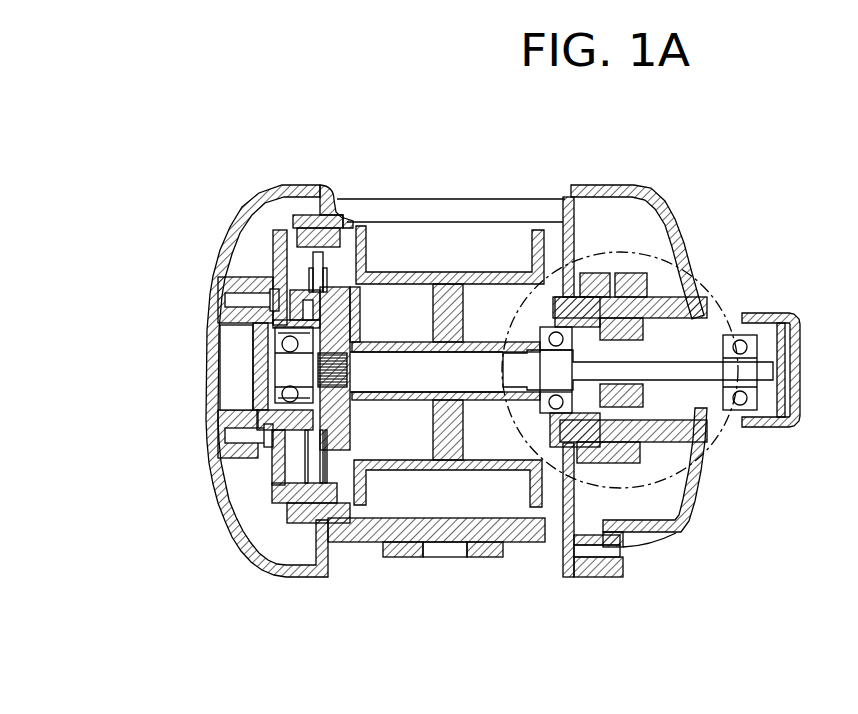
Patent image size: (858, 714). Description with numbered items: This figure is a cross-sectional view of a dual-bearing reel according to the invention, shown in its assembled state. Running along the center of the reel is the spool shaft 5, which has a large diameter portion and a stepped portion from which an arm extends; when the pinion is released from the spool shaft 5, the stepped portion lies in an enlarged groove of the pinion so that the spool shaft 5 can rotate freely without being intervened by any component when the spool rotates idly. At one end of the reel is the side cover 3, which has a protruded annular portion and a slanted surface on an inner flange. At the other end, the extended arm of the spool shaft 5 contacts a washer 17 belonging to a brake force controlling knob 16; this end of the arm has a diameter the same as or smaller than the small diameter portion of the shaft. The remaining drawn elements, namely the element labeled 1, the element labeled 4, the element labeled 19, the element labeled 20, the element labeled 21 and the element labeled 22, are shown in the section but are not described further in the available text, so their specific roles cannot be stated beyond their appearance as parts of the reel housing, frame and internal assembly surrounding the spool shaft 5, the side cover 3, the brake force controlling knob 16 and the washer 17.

The motor housing base 1 is at (544, 541).
The side cover 3 is at (683, 534).
The frame / armature core 4 is at (437, 272).
The spool shaft 5 is at (433, 367).
The brake force controlling knob 16 is at (797, 376).
The washer 17 is at (800, 350).
The end cover 19 is at (208, 425).
The bearing holder 20 is at (258, 368).
The bracket 21 is at (273, 229).
The circuit board 22 is at (326, 273).